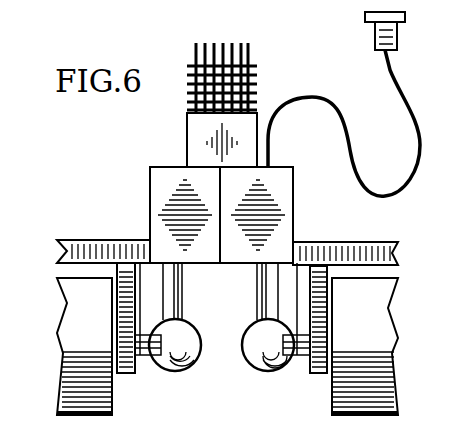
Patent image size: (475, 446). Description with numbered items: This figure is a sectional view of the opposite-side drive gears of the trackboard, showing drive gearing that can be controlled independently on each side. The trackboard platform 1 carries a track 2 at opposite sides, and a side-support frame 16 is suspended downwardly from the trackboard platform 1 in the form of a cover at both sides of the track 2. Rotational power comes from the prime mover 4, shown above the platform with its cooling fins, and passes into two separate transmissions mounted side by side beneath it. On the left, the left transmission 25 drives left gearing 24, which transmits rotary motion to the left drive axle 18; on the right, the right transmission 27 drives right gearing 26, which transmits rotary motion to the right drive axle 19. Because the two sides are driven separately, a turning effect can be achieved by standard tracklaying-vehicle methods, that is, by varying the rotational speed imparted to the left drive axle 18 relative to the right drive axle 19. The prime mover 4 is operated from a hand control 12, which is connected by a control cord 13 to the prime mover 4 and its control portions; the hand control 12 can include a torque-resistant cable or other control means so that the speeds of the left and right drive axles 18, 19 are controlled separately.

The trackboard platform 1 is at (76, 244).
The track 2 is at (84, 298).
The prime mover 4 is at (215, 58).
The hand control 12 is at (366, 16).
The control cord 13 is at (300, 97).
The side-support frame 16 is at (128, 287).
The left drive axle 18 is at (146, 357).
The right drive axle 19 is at (302, 357).
The left gearing 24 is at (185, 366).
The left transmission 25 is at (178, 178).
The right gearing 26 is at (254, 357).
The right transmission 27 is at (290, 180).